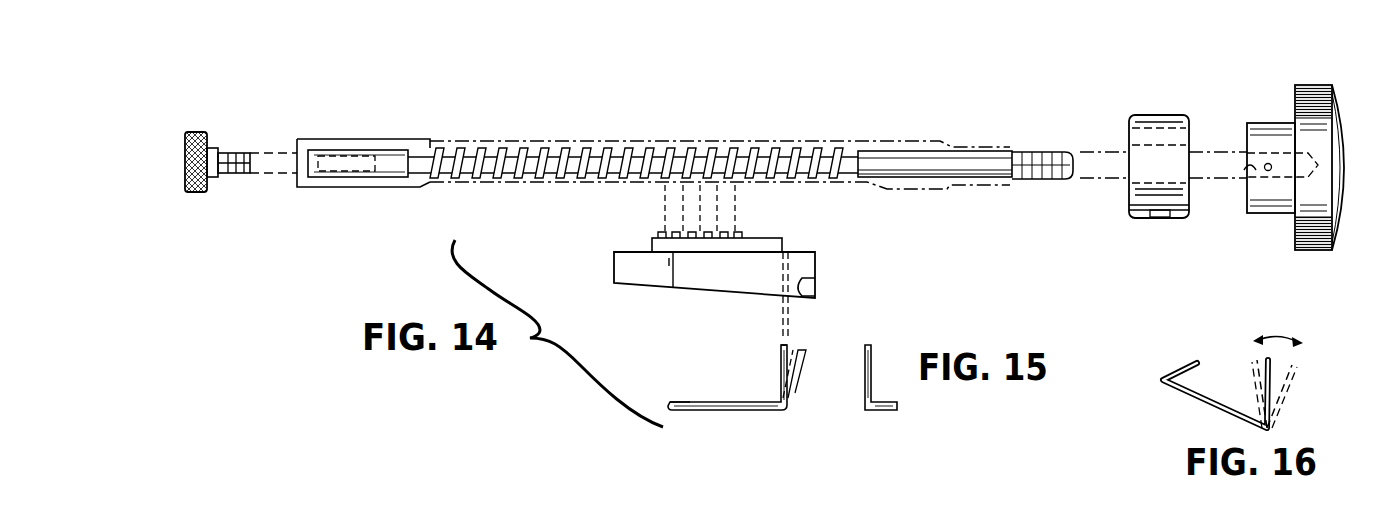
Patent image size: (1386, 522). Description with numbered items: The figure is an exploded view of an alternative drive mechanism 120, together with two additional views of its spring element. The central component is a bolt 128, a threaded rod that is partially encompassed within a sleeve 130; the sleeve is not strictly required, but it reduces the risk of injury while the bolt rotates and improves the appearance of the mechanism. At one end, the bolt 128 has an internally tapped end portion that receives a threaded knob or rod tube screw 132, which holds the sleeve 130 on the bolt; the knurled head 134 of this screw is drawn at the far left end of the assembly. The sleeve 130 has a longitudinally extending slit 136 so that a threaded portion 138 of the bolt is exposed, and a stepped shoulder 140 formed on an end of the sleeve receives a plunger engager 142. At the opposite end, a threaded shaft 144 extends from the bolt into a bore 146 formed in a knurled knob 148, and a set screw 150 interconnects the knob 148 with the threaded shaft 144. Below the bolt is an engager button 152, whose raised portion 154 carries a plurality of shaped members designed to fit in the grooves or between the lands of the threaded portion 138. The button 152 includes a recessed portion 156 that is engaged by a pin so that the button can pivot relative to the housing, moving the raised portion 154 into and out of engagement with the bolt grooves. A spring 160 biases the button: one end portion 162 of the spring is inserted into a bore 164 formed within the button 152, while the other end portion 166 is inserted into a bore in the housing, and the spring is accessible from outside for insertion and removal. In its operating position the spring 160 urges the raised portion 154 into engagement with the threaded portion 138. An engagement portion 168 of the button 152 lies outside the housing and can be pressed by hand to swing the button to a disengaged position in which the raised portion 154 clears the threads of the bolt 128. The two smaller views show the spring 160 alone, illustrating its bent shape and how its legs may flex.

In FIG. 14, the drive mechanism 120 is at (338, 250).
In FIG. 14, the bolt 128 is at (690, 124).
In FIG. 14, the sleeve 130 is at (403, 187).
In FIG. 14, the rod tube screw 132 is at (380, 147).
In FIG. 14, the knurled knob 134 is at (200, 132).
In FIG. 14, the slit 136 is at (572, 175).
In FIG. 14, the threaded portion 138 is at (565, 153).
In FIG. 14, the stepped shoulder 140 is at (958, 142).
In FIG. 14, the plunger engager 142 is at (1168, 113).
In FIG. 14, the threaded shaft 144 is at (1048, 148).
In FIG. 14, the bore 146 is at (1250, 167).
In FIG. 14, the knurled knob 148 is at (1327, 100).
In FIG. 14, the set screw 150 is at (1266, 163).
In FIG. 14, the engager button 152 is at (818, 236).
In FIG. 14, the raised portion 154 is at (738, 232).
In FIG. 14, the recessed portion 156 is at (817, 285).
In FIG. 14, the spring 160 is at (740, 410).
In FIG. 15, the spring 160 is at (884, 410).
In FIG. 16, the spring 160 is at (1202, 403).
In FIG. 14, the end portion 162 is at (781, 358).
In FIG. 14, the bore 164 is at (777, 278).
In FIG. 14, the end portion 166 is at (674, 400).
In FIG. 14, the engagement portion 168 is at (628, 269).